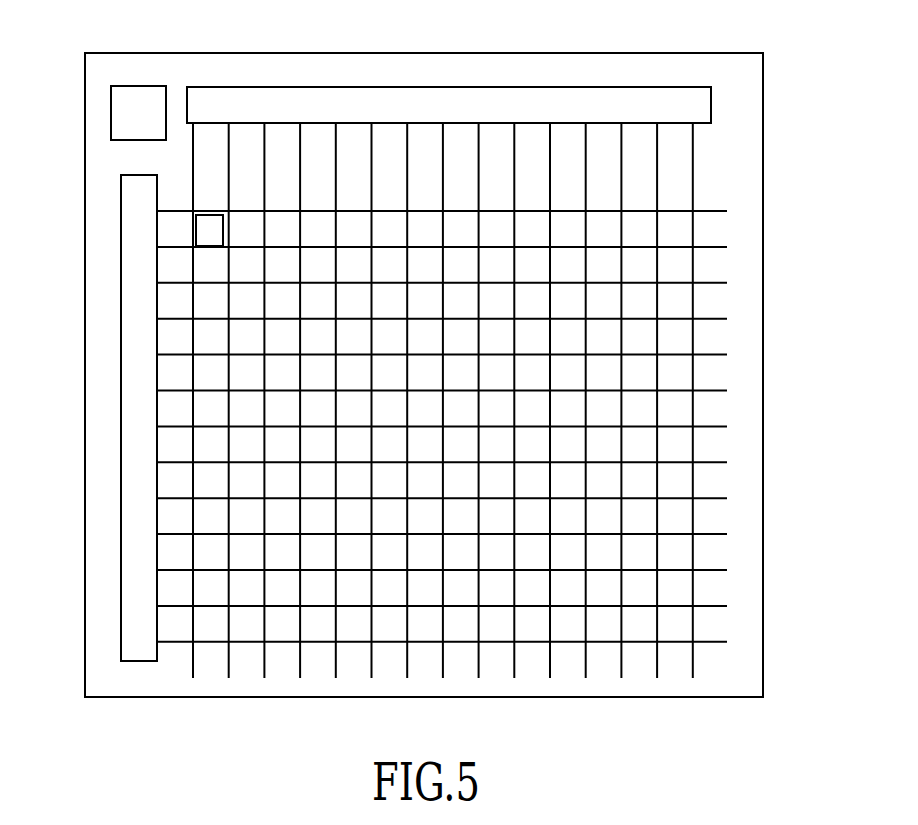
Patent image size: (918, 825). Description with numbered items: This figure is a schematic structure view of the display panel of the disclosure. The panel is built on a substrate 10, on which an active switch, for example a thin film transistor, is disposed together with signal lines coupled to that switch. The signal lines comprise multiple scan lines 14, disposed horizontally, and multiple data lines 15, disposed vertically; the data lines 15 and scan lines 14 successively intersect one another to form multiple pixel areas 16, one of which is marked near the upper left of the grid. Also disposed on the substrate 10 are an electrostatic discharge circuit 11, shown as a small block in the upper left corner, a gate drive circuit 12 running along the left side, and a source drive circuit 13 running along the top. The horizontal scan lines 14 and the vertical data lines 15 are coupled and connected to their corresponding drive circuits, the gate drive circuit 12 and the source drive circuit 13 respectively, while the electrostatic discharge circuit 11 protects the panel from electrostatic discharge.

The substrate 10 is at (733, 87).
The electrostatic discharge circuit 11 is at (137, 108).
The gate drive circuit 12 is at (142, 507).
The source drive circuit 13 is at (490, 103).
The scan lines 14 is at (713, 283).
The data lines 15 is at (697, 187).
The pixel areas 16 is at (208, 228).